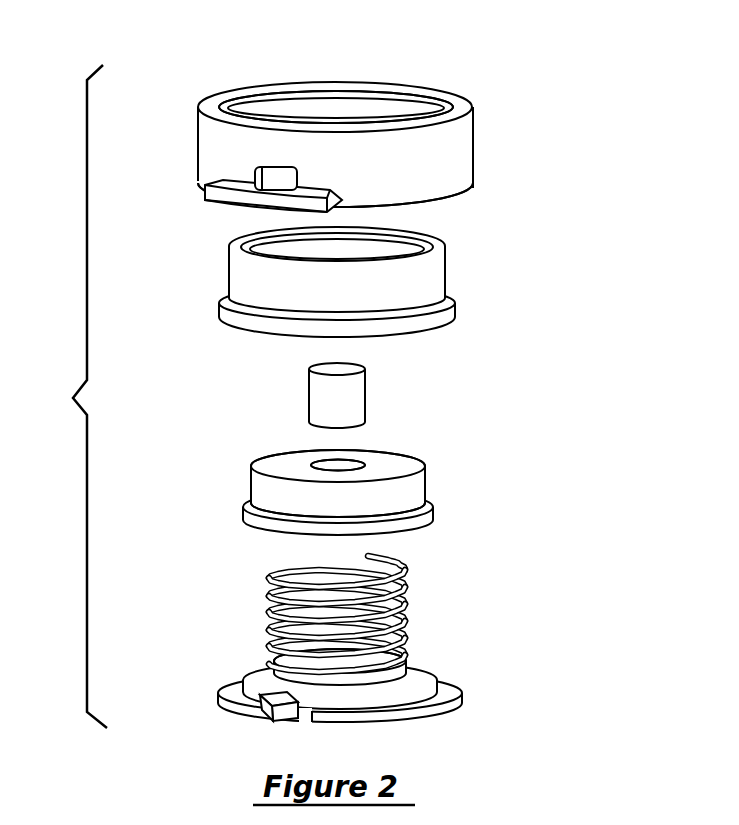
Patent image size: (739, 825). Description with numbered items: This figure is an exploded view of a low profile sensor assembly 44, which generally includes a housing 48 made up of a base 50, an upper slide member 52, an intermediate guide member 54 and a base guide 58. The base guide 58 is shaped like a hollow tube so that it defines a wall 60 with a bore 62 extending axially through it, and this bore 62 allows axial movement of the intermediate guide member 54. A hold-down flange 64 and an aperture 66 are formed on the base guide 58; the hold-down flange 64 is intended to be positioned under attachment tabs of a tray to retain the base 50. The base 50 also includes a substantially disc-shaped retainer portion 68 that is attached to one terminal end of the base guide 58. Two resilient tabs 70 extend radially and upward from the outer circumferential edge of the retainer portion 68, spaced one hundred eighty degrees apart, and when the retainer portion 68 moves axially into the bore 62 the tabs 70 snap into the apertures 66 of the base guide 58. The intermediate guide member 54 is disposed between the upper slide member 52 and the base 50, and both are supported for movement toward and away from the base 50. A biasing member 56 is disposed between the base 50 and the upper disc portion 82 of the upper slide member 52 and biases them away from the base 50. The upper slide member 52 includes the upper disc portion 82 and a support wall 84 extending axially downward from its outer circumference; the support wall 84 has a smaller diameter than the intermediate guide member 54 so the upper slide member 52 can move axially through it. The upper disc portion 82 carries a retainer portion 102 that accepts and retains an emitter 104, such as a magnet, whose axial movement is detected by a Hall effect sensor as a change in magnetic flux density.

The low profile sensor assembly 44 is at (67, 396).
The housing 48 is at (548, 326).
The base 50 is at (364, 700).
The upper slide member 52 is at (403, 488).
The intermediate guide member 54 is at (438, 280).
The biasing member 56 is at (408, 604).
The base guide 58 is at (461, 129).
The wall 60 is at (462, 172).
The bore 62 is at (319, 87).
The hold-down flange 64 is at (222, 201).
The aperture 66 is at (275, 181).
The retainer portion 68 is at (398, 716).
The resilient tab 70 is at (257, 703).
The upper disc portion 82 is at (397, 462).
The support wall 84 is at (267, 493).
The retainer portion 102 is at (330, 460).
The emitter 104 is at (362, 400).